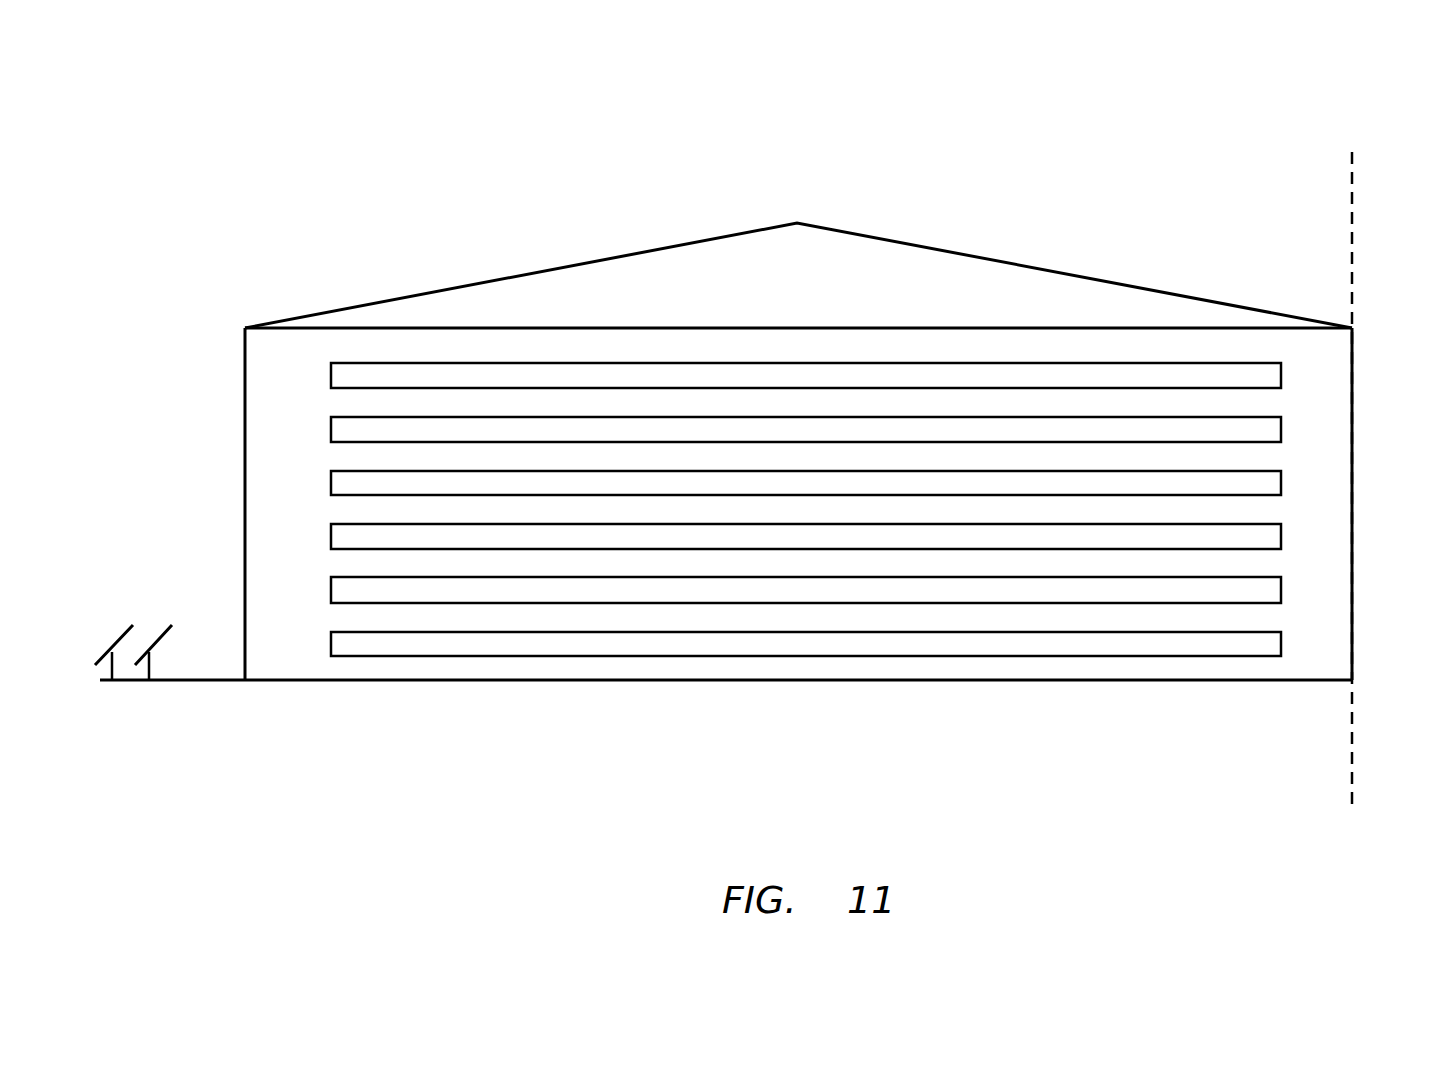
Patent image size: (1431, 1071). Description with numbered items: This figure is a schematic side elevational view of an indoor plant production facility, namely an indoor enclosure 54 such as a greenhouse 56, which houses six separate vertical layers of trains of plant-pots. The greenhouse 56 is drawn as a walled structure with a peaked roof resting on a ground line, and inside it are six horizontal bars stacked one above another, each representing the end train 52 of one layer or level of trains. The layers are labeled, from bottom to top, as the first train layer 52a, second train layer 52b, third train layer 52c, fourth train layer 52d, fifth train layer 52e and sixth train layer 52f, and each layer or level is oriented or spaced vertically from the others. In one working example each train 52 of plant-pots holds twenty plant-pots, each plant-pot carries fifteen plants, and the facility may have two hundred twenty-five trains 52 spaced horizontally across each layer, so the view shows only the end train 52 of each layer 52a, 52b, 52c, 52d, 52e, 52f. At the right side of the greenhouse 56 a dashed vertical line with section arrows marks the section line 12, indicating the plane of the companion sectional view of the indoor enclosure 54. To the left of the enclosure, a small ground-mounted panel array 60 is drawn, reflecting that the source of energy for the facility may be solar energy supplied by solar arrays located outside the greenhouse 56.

The section line 12- 12 is at (1352, 152).
The train of plant-pots 52 is at (877, 511).
The first train layer 52a is at (1282, 645).
The second train layer 52b is at (1282, 592).
The third train layer 52c is at (1282, 538).
The fourth train layer 52d is at (1282, 484).
The fifth train layer 52e is at (1282, 431).
The sixth train layer 52f is at (1282, 378).
The indoor enclosure 54 is at (931, 138).
The greenhouse 56 is at (245, 327).
The ground-mounted solar array 60 is at (141, 589).